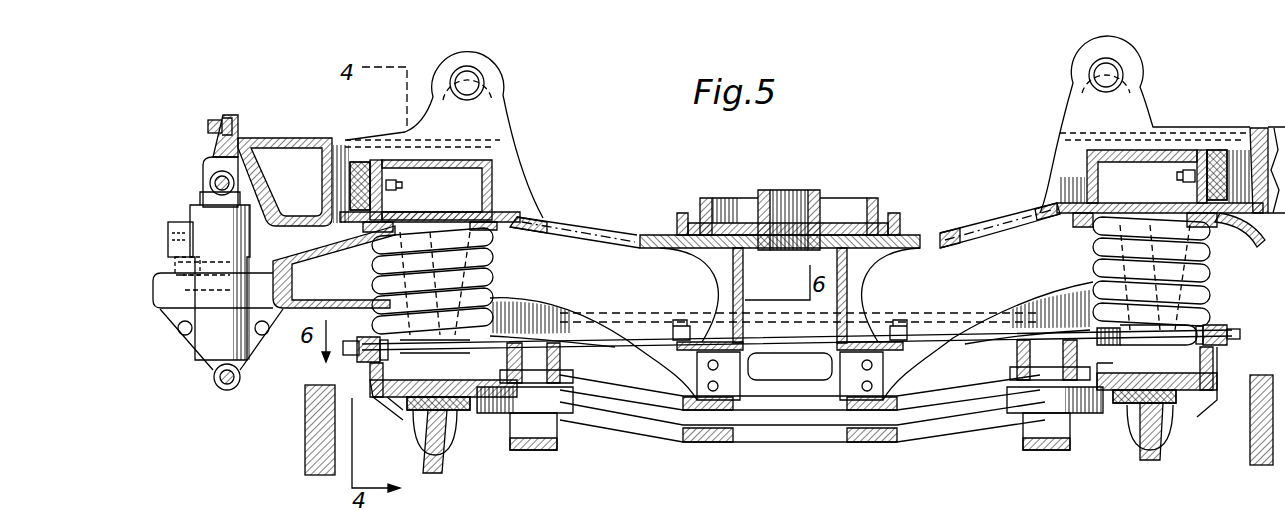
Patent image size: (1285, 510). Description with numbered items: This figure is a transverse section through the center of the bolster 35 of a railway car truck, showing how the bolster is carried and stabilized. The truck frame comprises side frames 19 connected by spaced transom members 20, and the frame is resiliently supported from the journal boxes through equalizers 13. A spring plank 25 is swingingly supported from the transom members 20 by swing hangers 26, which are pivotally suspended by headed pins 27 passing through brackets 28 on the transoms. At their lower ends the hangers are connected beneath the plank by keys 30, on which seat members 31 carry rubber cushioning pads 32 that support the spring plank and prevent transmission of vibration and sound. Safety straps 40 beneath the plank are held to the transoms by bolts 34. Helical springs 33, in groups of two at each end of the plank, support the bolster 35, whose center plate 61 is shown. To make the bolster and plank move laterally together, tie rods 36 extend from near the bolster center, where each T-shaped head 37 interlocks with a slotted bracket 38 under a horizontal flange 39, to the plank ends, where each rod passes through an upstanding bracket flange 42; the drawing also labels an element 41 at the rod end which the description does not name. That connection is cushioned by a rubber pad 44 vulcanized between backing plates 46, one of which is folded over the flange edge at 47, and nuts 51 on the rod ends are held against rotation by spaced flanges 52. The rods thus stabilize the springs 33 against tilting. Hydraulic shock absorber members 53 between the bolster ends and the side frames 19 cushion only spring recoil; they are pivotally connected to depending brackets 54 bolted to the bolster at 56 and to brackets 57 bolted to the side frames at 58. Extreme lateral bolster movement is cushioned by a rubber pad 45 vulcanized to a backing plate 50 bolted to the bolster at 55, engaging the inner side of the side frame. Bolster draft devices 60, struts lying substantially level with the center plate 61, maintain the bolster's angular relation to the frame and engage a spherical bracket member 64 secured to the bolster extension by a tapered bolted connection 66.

The equalizers 13 is at (305, 448).
The side frames 19 is at (293, 140).
The transom members 20 is at (345, 148).
The spring plank 25 is at (795, 432).
The swing hangers 26 is at (510, 128).
The headed pins 27 is at (475, 83).
The brackets 28 is at (503, 108).
The keys 30 is at (1150, 462).
The seat members 31 is at (1125, 408).
The rubber cushioning pads 32 is at (395, 405).
The helical springs 33 is at (493, 265).
The bolts 34 is at (573, 350).
The bolster 35 is at (625, 230).
The tie rods 36 is at (608, 330).
The T-shaped head 37 is at (712, 255).
The slotted bracket 38 is at (912, 320).
The horizontal flange 39 is at (680, 320).
The safety straps 40 is at (540, 448).
The sleeve 41 is at (1180, 316).
The upstanding bracket flange 42 is at (370, 372).
The rubber pad 44 is at (372, 337).
The rubber pad 45 is at (360, 162).
The backing plates 46 is at (1011, 501).
The folded edge 47 is at (1065, 500).
The backing plate 50 is at (377, 160).
The nuts 51 is at (345, 355).
The spaced flanges 52 is at (352, 341).
The hydraulic shock absorber members 53 is at (205, 343).
The depending brackets 54 is at (212, 372).
The bolts 55 is at (398, 185).
The bolts 56 is at (178, 330).
The brackets 57 is at (210, 152).
The bolts 58 is at (215, 118).
The bolster draft devices 60 is at (168, 226).
The center plate 61 is at (745, 205).
The spherical bracket member 64 is at (175, 240).
The tapered bolted connection 66 is at (178, 268).